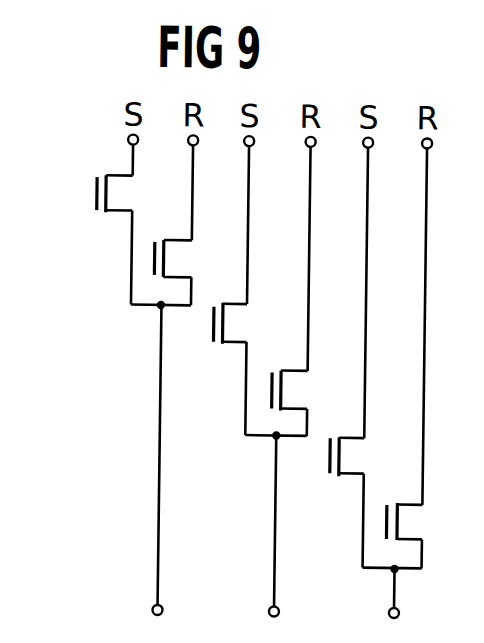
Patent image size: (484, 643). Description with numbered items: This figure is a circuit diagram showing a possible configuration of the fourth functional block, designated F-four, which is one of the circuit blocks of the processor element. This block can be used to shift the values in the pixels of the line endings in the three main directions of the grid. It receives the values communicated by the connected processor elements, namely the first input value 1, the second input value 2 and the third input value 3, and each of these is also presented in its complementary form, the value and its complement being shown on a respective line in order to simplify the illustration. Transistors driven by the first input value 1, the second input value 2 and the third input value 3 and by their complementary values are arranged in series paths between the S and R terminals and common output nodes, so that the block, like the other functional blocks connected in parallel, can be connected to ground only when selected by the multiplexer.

The input X1 1 is at (112, 225).
The input X2 2 is at (170, 355).
The input X3 3 is at (224, 486).